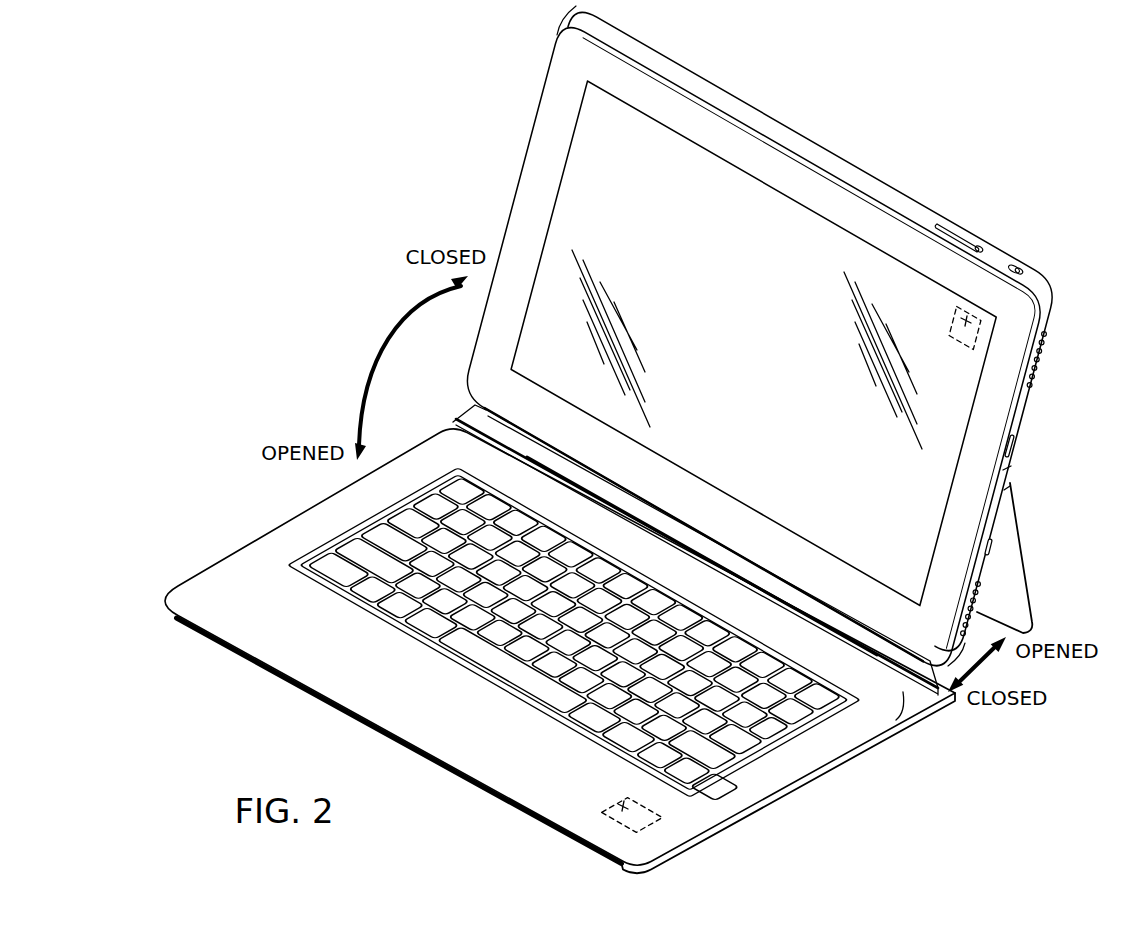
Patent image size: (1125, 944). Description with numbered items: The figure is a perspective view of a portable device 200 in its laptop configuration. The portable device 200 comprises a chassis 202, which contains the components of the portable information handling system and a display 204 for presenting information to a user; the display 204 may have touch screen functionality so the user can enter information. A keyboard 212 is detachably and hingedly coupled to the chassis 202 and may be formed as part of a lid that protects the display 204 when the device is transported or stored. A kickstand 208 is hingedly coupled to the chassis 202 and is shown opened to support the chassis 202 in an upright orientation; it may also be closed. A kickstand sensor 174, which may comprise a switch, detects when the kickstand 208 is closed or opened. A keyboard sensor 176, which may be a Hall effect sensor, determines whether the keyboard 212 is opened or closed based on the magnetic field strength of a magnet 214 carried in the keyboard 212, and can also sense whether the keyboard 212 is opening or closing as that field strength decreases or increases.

The portable device 200 is at (337, 208).
The chassis 202 is at (791, 339).
The display 204 is at (733, 361).
The kickstand sensor 174 is at (1017, 476).
The keyboard sensor 176 is at (972, 312).
The kickstand 208 is at (1026, 575).
The keyboard 212 is at (560, 639).
The magnet 214 is at (622, 812).